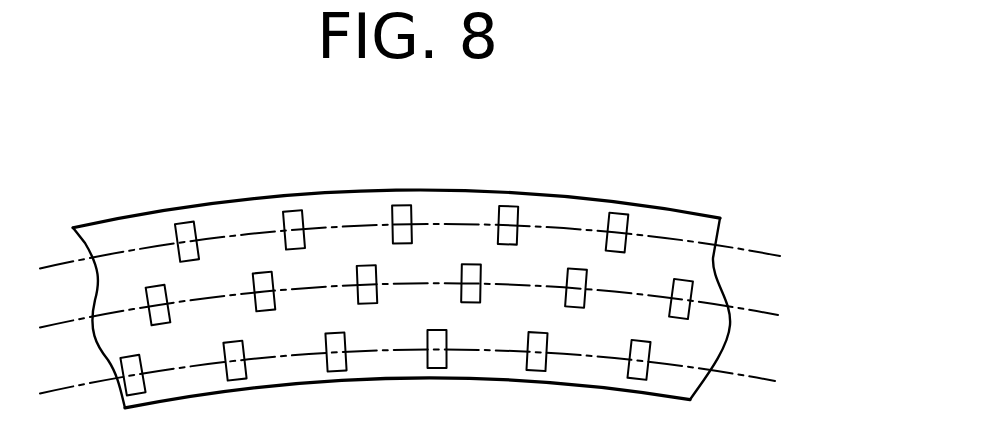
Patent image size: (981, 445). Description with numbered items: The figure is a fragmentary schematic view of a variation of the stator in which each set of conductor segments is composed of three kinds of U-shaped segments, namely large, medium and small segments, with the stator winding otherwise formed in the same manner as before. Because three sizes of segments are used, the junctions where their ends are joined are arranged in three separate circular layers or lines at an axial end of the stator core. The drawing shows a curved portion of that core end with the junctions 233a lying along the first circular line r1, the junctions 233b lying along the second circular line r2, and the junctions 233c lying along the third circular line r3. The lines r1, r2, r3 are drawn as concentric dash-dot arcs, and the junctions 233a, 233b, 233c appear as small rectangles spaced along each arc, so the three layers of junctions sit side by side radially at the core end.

The junction 233a is at (451, 347).
The junction 233b is at (485, 280).
The junction 233c is at (520, 224).
The circular layer r1 is at (769, 381).
The circular layer r2 is at (769, 316).
The circular layer r3 is at (769, 258).